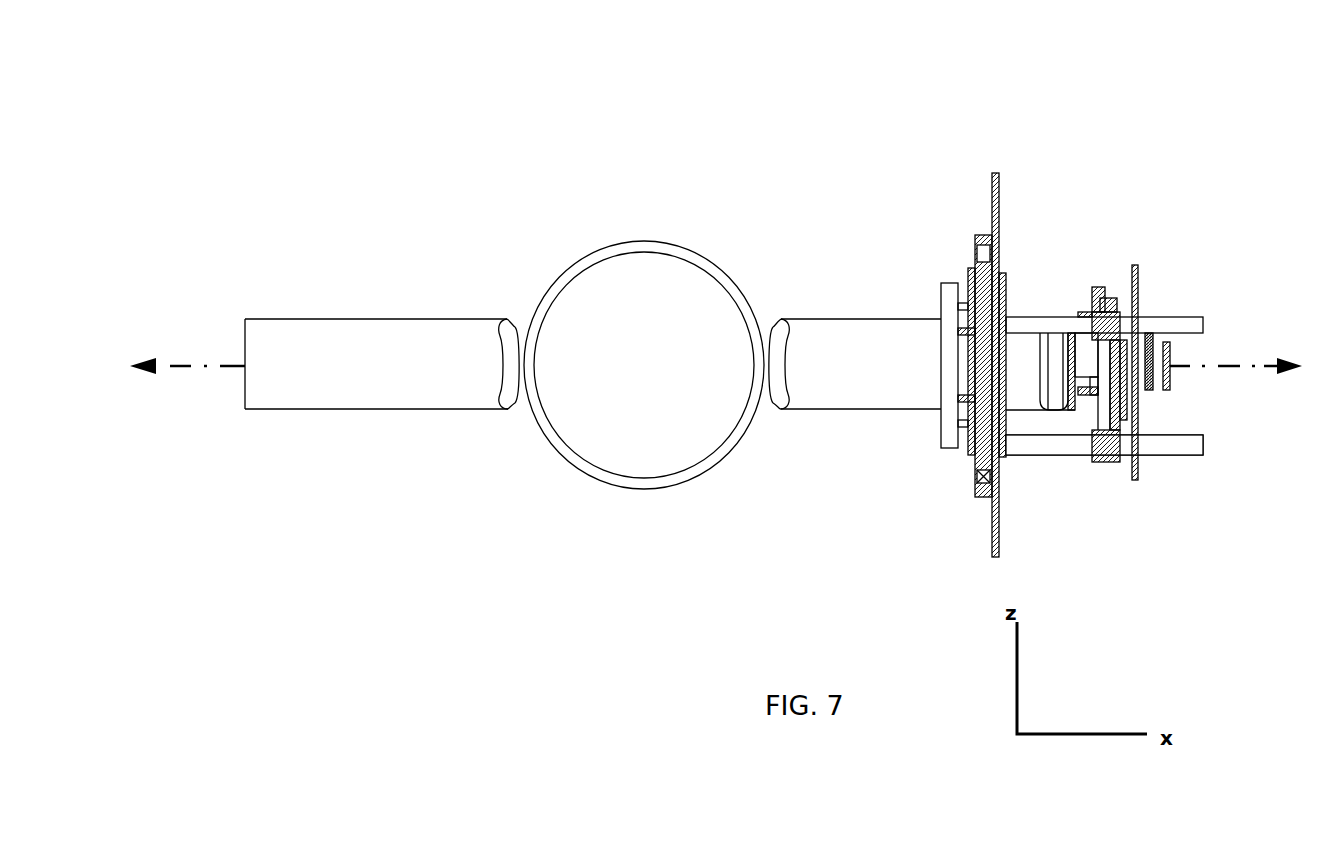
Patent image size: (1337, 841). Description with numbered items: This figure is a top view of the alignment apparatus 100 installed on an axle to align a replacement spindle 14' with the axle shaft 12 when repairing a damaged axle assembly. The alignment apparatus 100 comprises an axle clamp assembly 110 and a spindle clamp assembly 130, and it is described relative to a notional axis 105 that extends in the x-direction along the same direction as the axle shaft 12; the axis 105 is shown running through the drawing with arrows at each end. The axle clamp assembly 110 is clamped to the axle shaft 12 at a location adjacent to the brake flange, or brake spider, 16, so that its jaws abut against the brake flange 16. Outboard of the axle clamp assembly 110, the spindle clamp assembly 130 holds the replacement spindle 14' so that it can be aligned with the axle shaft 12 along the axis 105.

The alignment apparatus 100 is at (815, 105).
The axle clamp assembly 110 is at (953, 198).
The spindle clamp assembly 130 is at (1124, 234).
The axle shaft 12 is at (868, 337).
The brake flange 16 is at (945, 318).
The notional axis 105 is at (182, 366).
The replacement spindle 14' is at (1147, 391).